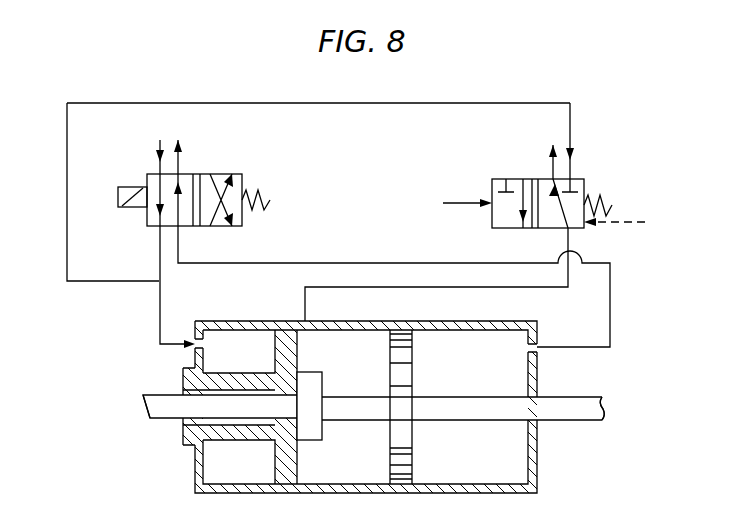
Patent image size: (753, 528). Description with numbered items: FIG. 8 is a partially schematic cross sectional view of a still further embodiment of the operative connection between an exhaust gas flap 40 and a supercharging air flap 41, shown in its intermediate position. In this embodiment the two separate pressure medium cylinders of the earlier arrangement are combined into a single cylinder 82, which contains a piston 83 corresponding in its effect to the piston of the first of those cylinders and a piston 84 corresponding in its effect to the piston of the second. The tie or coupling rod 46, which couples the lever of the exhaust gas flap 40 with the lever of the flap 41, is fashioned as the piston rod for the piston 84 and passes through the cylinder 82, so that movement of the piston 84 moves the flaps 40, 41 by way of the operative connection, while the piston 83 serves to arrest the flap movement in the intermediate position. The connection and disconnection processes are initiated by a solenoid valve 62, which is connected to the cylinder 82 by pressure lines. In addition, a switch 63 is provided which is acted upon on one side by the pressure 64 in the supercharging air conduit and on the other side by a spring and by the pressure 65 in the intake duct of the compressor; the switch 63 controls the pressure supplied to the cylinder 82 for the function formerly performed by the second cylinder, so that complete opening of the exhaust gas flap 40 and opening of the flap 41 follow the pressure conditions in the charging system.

The solenoid valve 62 is at (220, 160).
The switch 63 is at (510, 157).
The pressure in the supercharging air conduit 64 is at (456, 206).
The pressure in the intake duct 65 is at (619, 228).
The single cylinder 82 is at (195, 458).
The piston 83 is at (282, 460).
The piston 84 is at (405, 447).
The tie or coupling rod 46 is at (577, 420).
The exhaust gas flap 40 is at (93, 410).
The flap 41 is at (632, 413).